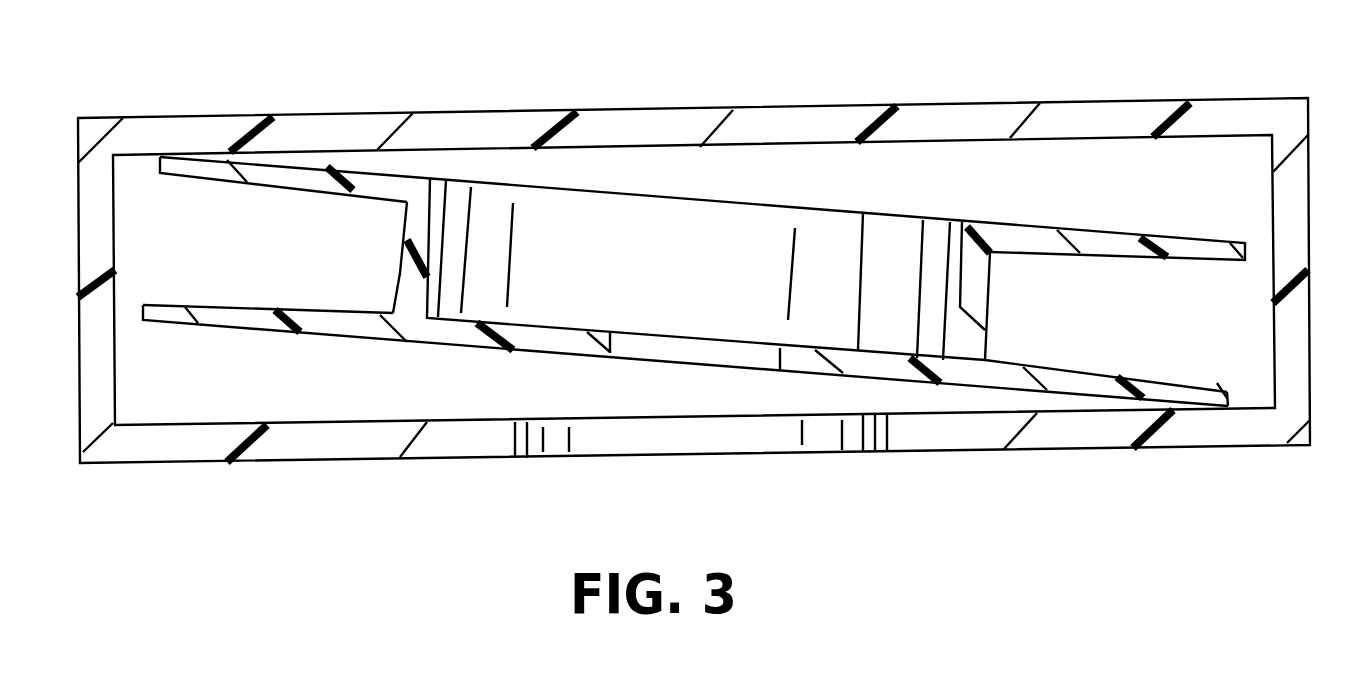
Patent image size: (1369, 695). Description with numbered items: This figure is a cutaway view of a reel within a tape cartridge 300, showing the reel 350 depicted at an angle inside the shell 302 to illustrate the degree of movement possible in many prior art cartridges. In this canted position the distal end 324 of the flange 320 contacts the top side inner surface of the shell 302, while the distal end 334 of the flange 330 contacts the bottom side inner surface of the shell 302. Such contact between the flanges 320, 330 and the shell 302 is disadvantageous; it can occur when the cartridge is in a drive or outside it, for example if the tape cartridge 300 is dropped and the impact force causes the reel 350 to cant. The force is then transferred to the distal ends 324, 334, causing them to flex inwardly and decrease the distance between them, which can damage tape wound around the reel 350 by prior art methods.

The tape cartridge 300 is at (1078, 478).
The shell 302 is at (845, 117).
The flange 320 is at (295, 168).
The distal end 324 is at (173, 165).
The flange 330 is at (1180, 393).
The distal end 334 is at (1217, 390).
The reel 350 is at (540, 280).